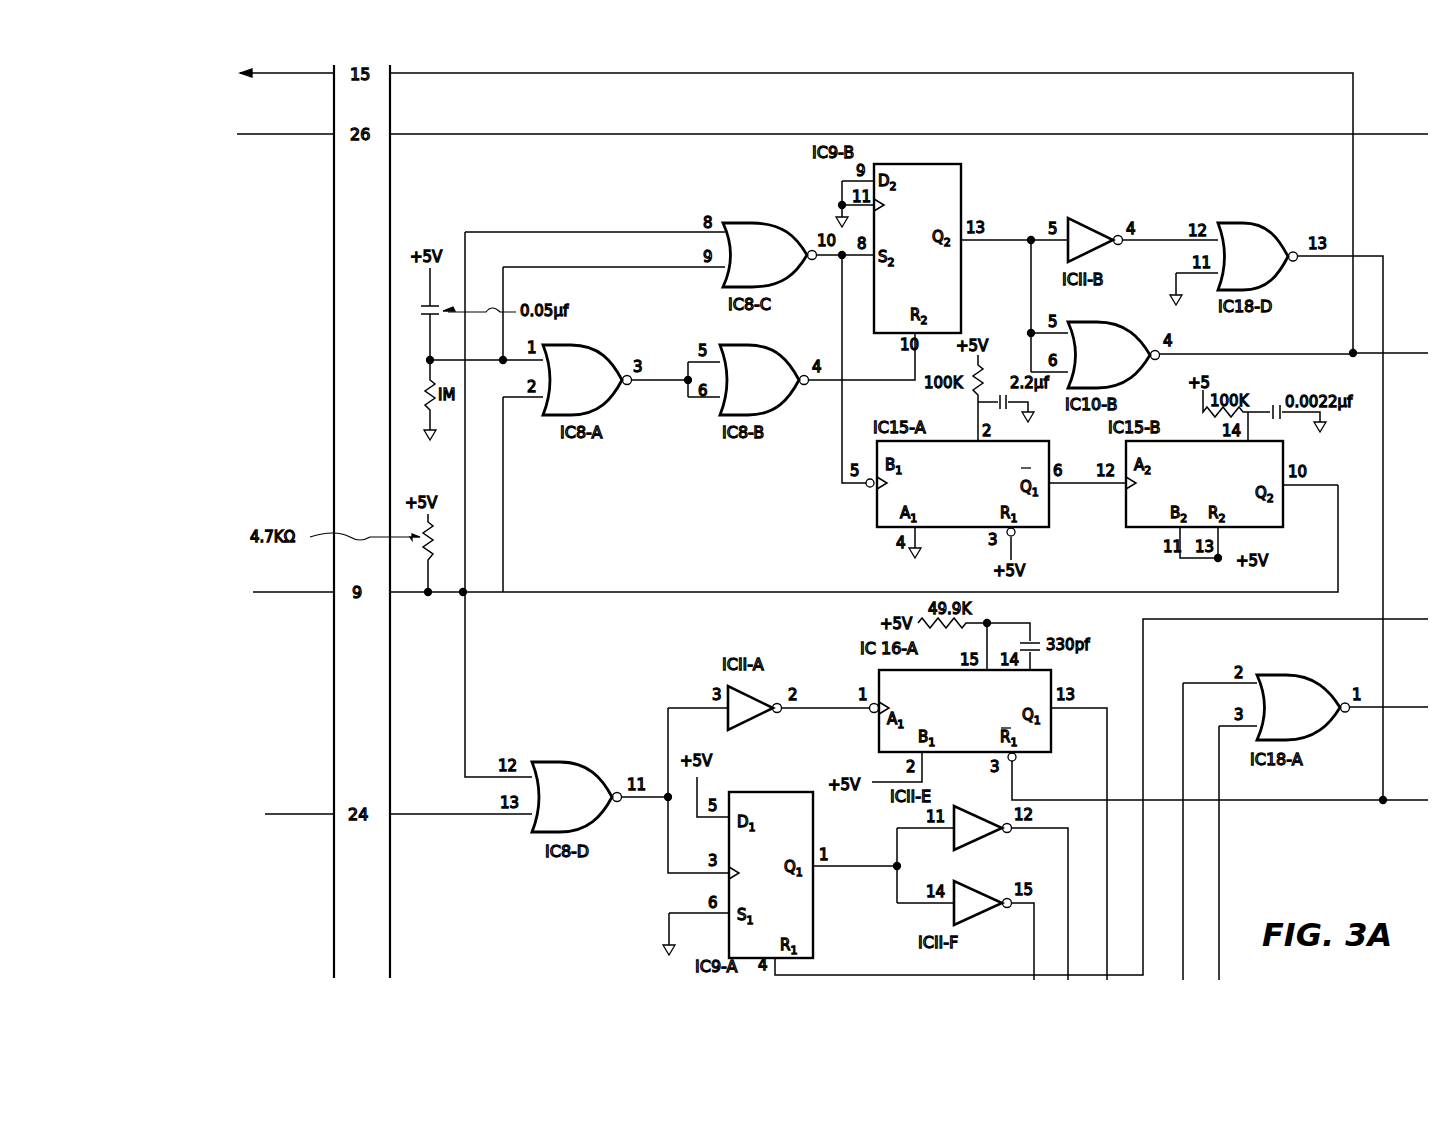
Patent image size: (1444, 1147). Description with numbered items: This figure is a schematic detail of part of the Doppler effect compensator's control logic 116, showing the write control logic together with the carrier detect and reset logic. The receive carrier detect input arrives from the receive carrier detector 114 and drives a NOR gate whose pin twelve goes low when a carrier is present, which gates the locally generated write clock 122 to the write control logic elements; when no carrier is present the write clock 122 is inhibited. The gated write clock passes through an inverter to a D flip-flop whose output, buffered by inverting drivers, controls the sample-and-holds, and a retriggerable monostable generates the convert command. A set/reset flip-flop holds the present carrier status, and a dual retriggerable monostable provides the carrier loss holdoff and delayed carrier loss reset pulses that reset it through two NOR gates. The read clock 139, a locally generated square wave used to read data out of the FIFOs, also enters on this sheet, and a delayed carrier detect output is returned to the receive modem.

The read clock 139 is at (160, 150).
The write clock 122 is at (150, 828).
The receive carrier detector 114 is at (204, 591).
The control logic 116 is at (202, 90).